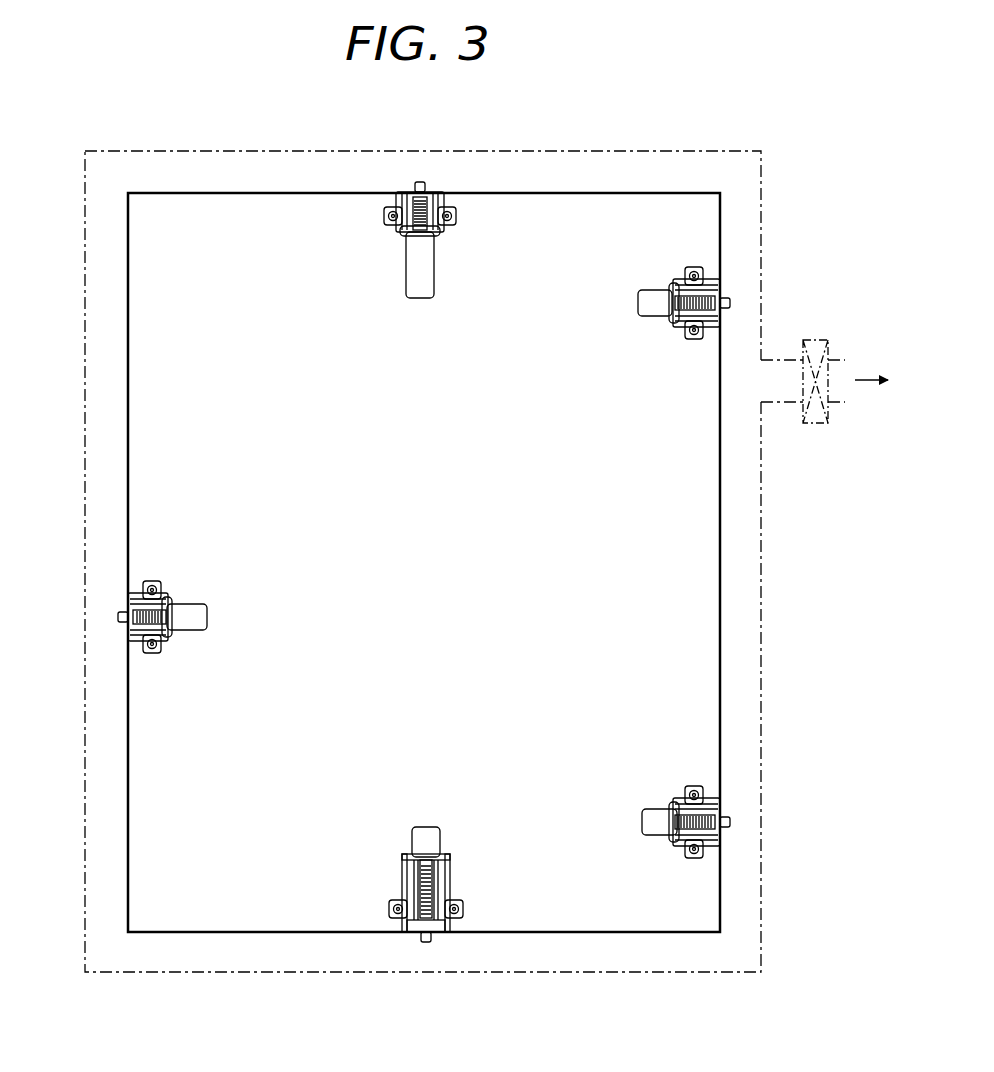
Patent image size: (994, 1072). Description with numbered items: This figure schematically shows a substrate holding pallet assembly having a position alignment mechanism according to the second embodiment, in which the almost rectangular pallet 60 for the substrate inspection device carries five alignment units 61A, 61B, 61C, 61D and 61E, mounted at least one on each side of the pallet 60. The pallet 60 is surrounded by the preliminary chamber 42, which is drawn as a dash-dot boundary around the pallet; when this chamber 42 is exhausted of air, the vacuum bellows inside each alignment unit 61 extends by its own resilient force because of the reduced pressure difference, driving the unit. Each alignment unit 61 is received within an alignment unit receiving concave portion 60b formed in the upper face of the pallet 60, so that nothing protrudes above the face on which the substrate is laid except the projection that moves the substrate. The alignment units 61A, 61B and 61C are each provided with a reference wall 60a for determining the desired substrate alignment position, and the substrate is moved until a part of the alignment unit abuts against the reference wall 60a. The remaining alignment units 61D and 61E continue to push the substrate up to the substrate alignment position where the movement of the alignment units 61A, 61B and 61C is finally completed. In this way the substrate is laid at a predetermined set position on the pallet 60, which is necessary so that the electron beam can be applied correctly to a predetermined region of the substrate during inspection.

The preliminary chamber 42 is at (108, 151).
The pallet 60 is at (209, 174).
The alignment unit 61 is at (433, 184).
The alignment unit 61A is at (405, 946).
The alignment unit 61B is at (736, 851).
The alignment unit 61C is at (733, 334).
The alignment unit 61D is at (411, 162).
The alignment unit 61E is at (111, 596).
The reference wall 60a is at (730, 298).
The alignment unit receiving concave portion 60b is at (448, 234).